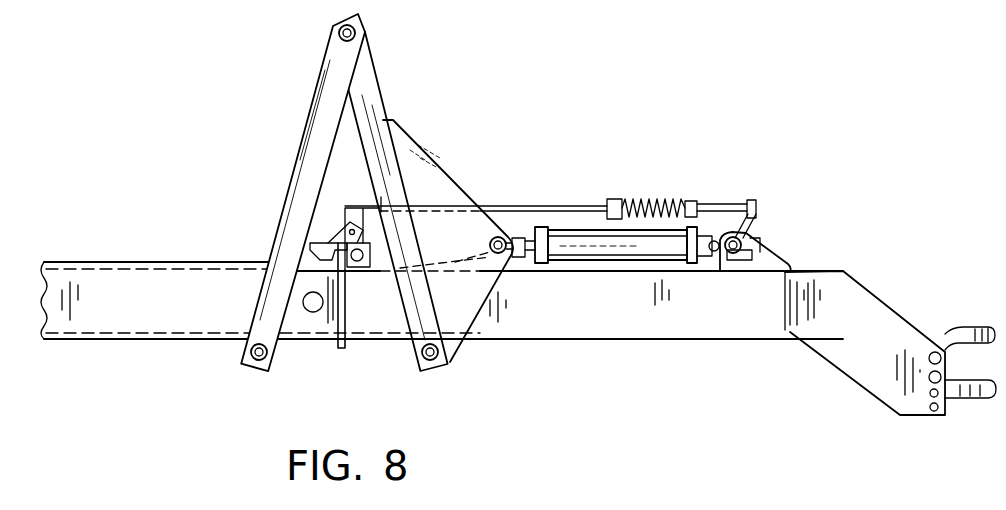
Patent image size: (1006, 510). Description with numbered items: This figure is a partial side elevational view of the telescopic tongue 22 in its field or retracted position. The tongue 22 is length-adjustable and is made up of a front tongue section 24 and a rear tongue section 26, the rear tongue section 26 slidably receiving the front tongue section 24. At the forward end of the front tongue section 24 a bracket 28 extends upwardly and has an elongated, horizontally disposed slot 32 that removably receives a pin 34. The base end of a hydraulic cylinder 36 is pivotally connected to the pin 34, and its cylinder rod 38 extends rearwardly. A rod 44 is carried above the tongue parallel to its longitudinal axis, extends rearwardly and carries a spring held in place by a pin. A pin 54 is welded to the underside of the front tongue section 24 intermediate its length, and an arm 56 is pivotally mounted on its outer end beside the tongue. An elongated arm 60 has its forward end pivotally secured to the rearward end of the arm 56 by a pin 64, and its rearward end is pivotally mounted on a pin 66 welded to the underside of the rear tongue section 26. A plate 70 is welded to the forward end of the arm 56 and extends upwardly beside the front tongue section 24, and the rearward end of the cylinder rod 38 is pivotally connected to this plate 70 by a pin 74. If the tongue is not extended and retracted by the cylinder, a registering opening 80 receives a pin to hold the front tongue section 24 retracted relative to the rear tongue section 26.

The elongated tongue 22 is at (873, 242).
The front tongue section 24 is at (683, 322).
The rear tongue section 26 is at (122, 343).
The bracket 28 is at (786, 252).
The slot 32 is at (760, 243).
The pin 34 is at (737, 236).
The hydraulic cylinder 36 is at (636, 228).
The cylinder rod 38 is at (525, 252).
The rod 44 is at (588, 205).
The pin 54 is at (448, 362).
The arm 56 is at (405, 283).
The elongated arm 60 is at (298, 150).
The pin 64 is at (362, 30).
The pin 66 is at (248, 362).
The plate 70 is at (456, 243).
The pin 74 is at (503, 238).
The registering opening 80 is at (314, 312).